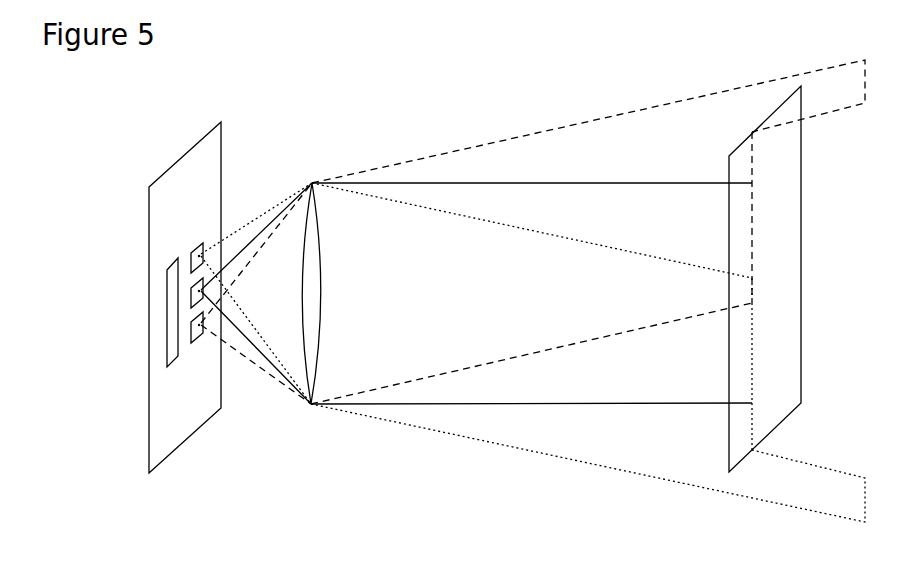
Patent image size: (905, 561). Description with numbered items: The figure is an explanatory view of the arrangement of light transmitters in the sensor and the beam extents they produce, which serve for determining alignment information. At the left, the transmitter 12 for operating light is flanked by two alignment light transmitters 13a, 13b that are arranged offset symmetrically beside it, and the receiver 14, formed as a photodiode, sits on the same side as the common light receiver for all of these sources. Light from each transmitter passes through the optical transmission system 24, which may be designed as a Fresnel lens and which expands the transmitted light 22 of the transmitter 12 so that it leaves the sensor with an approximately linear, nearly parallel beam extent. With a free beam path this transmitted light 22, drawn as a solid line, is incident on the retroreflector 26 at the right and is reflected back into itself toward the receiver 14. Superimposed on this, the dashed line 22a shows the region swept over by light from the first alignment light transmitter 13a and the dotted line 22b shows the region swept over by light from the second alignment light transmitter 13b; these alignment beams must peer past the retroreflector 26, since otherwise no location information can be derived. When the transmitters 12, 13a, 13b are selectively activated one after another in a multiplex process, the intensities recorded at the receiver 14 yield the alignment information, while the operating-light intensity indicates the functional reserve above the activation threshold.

The transmitter for operating light 12 is at (197, 293).
The first alignment light transmitter 13a is at (203, 250).
The second alignment light transmitter 13b is at (192, 345).
The receiver 14 is at (168, 323).
The transmitted light 22 is at (467, 407).
The dashed line 22a is at (562, 125).
The dotted line 22b is at (597, 462).
The optical transmission system 24 is at (308, 407).
The retroreflector 26 is at (801, 320).